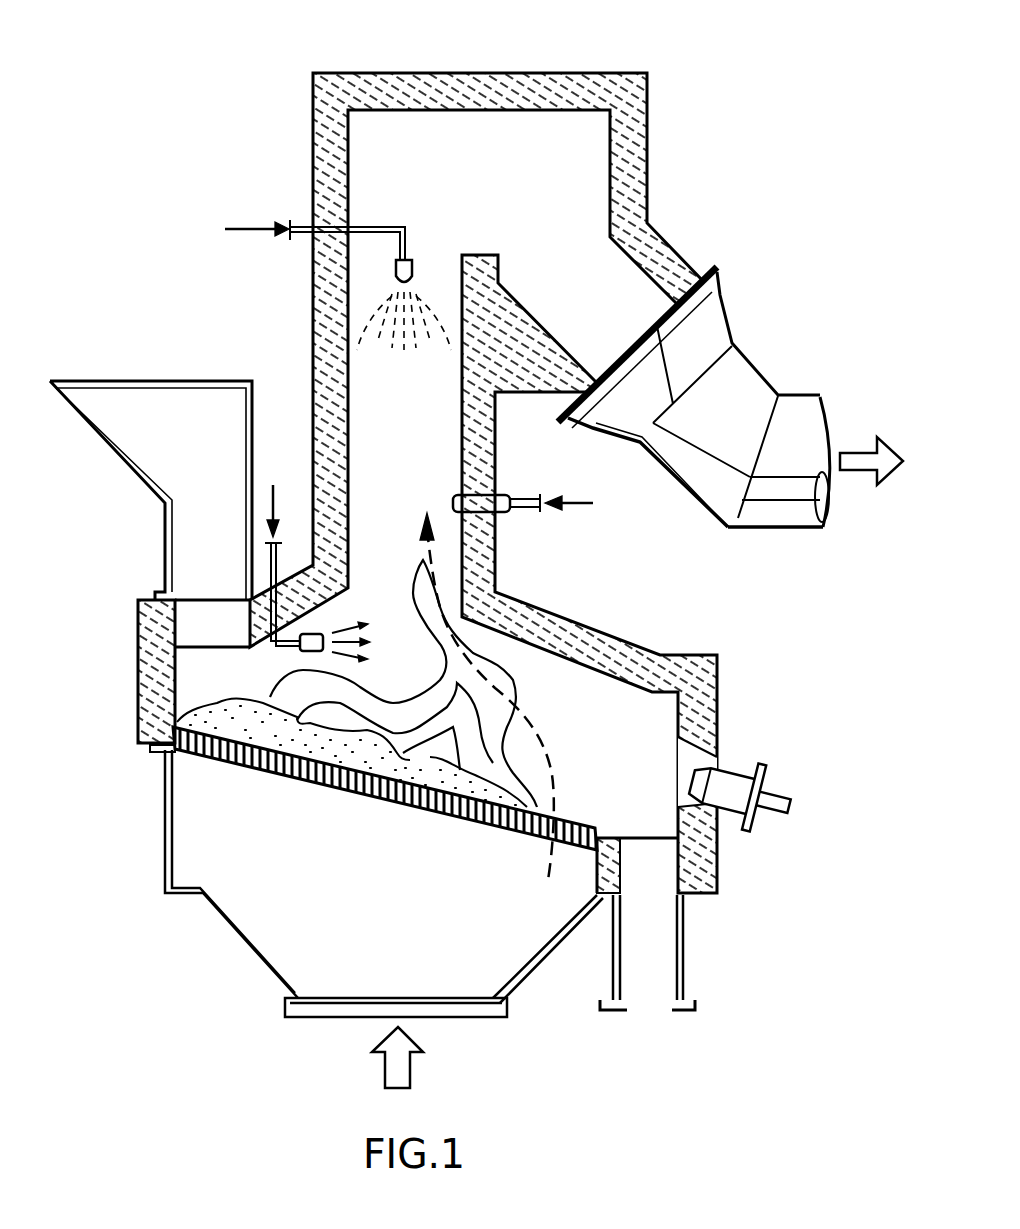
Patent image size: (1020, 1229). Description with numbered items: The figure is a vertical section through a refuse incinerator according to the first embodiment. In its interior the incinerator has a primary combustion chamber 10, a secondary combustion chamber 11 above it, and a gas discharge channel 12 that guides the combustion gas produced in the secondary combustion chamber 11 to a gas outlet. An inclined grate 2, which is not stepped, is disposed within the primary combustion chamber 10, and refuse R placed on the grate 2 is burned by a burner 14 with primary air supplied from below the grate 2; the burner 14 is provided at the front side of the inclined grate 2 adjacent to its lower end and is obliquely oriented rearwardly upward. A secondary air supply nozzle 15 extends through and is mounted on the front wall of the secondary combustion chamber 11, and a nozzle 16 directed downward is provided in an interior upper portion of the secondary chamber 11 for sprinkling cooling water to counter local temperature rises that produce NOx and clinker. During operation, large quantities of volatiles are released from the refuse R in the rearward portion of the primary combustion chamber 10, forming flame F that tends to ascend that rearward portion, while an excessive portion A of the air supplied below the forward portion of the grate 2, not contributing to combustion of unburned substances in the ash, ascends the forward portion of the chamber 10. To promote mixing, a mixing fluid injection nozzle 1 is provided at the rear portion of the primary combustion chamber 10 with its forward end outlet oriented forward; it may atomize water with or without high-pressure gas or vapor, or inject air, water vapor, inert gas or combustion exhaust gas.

The mixing fluid injection nozzle 1 is at (332, 612).
The inclined grate 2 is at (450, 817).
The primary combustion chamber 10 is at (523, 660).
The secondary combustion chamber 11 is at (377, 388).
The gas discharge channel 12 is at (573, 187).
The burner 14 is at (730, 778).
The secondary air supply nozzle 15 is at (505, 495).
The nozzle 16 is at (417, 267).
The excessive air A is at (537, 727).
The flame F is at (413, 577).
The refuse R is at (273, 770).